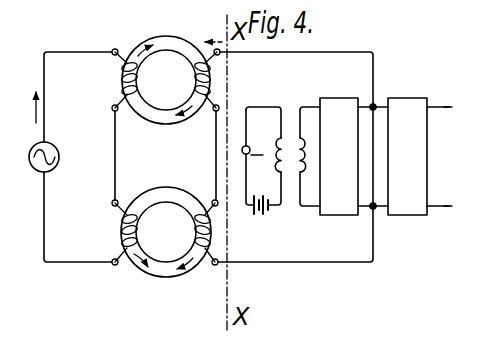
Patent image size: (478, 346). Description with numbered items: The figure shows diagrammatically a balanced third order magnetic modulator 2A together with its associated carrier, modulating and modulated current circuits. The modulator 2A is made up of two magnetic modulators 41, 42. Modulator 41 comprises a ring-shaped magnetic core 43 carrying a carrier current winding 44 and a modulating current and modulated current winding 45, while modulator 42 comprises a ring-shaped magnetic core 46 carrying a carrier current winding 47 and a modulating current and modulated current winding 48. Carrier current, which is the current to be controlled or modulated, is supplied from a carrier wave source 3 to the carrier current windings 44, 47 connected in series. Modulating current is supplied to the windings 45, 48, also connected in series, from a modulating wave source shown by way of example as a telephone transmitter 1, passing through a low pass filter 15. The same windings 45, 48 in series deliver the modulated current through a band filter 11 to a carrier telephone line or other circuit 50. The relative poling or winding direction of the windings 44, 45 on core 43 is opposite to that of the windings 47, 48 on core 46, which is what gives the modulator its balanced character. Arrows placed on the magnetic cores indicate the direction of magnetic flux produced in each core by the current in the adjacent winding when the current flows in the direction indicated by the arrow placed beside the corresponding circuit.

The telephone transmitter 1 is at (250, 147).
The balanced third order magnetic modulator 2A is at (166, 124).
The carrier wave source 3 is at (58, 155).
The band filter 11 is at (409, 98).
The low pass filter 15 is at (336, 98).
The magnetic modulator 41 is at (160, 116).
The magnetic modulator 42 is at (160, 263).
The ring-shaped magnetic core 43 is at (188, 119).
The carrier current winding 44 is at (137, 77).
The modulating current and modulated current winding 45 is at (195, 91).
The ring-shaped magnetic core 46 is at (186, 271).
The carrier current winding 47 is at (137, 232).
The modulating current and modulated current winding 48 is at (193, 243).
The carrier telephone line or other circuit 50 is at (448, 107).